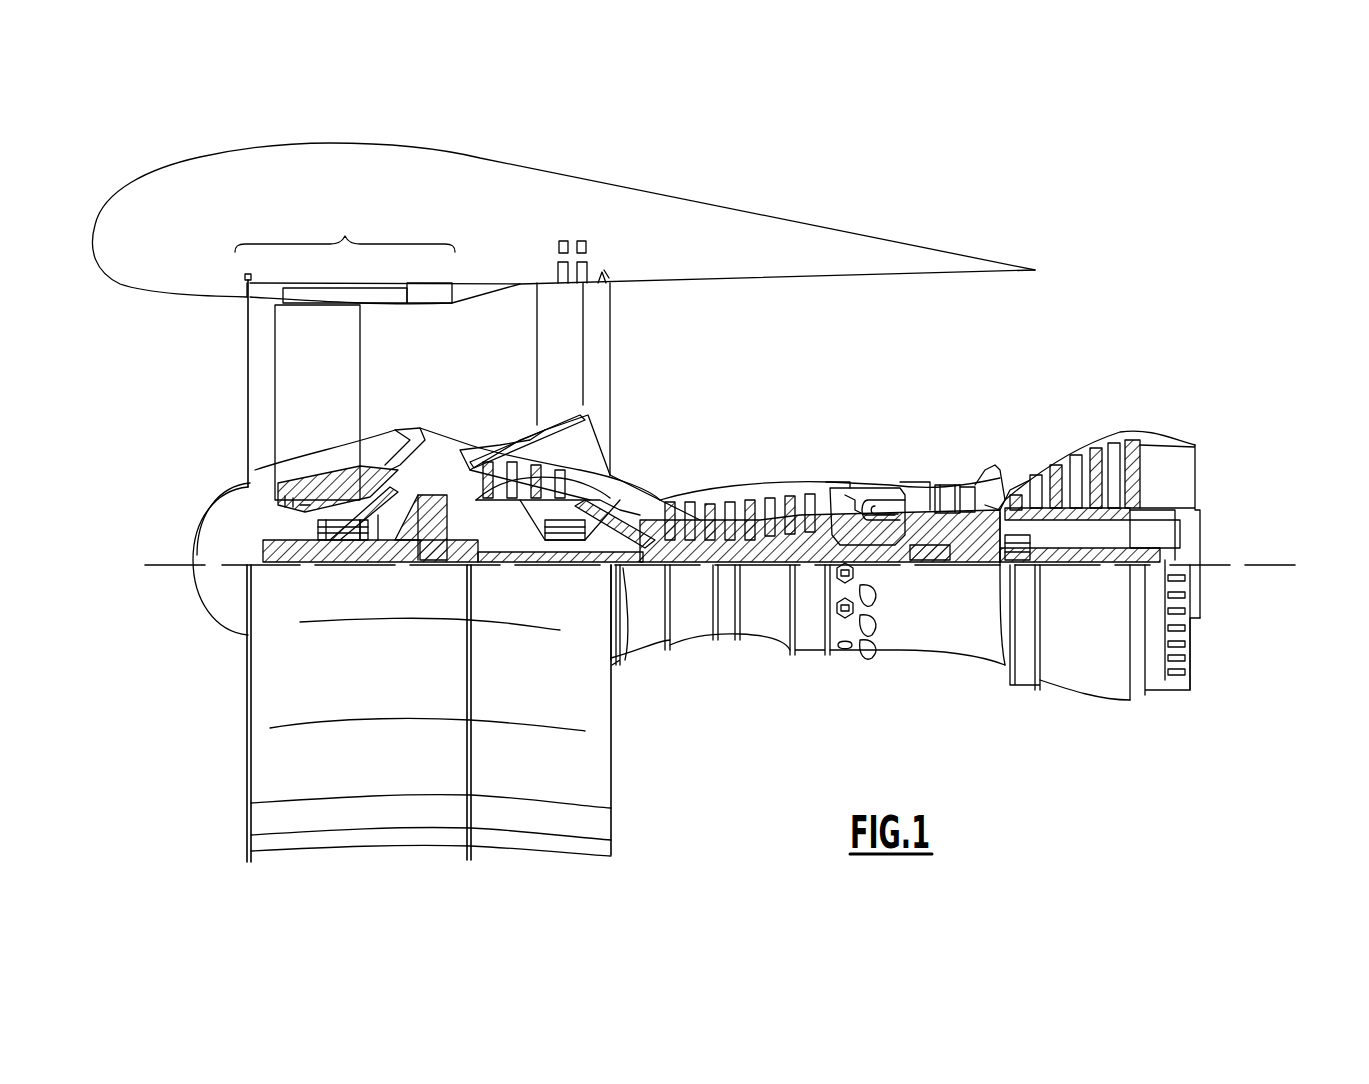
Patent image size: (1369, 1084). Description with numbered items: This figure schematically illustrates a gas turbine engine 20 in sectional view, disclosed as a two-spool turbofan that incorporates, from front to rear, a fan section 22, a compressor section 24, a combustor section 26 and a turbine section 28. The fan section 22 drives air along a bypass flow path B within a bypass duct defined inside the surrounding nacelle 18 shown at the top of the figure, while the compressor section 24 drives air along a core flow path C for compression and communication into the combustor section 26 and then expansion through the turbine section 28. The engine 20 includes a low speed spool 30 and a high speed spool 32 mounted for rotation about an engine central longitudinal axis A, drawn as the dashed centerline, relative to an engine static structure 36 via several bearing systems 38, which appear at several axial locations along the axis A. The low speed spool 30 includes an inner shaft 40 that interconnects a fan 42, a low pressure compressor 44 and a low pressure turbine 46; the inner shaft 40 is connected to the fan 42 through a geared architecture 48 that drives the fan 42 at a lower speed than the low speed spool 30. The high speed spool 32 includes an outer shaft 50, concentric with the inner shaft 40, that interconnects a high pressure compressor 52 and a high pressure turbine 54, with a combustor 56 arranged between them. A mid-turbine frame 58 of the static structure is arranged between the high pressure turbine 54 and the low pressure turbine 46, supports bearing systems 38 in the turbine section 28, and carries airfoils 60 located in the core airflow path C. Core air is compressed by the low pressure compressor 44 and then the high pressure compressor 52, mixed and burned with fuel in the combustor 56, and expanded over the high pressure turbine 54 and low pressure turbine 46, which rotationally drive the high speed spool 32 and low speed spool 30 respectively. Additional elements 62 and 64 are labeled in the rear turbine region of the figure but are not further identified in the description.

The nacelle 18 is at (558, 198).
The gas turbine engine 20 is at (1068, 212).
The fan section 22 is at (422, 341).
The compressor section 24 is at (857, 400).
The combustor section 26 is at (933, 400).
The turbine section 28 is at (1148, 400).
The low speed spool 30 is at (768, 575).
The high speed spool 32 is at (803, 506).
The engine static structure 36 is at (808, 658).
The bearing systems 38 is at (330, 570).
The inner shaft 40 is at (640, 660).
The fan 42 is at (332, 410).
The low pressure compressor 44 is at (545, 470).
The low pressure turbine 46 is at (1073, 455).
The geared architecture 48 is at (435, 575).
The outer shaft 50 is at (895, 560).
The high pressure compressor 52 is at (730, 490).
The high pressure turbine 54 is at (950, 485).
The combustor 56 is at (884, 503).
The mid-turbine frame 58 is at (1008, 470).
The airfoils 60 is at (1030, 560).
The core airflow path 62 is at (1130, 500).
The bypass flow path 64 is at (1127, 457).
The engine central longitudinal axis A is at (1290, 562).
The bypass flow path B is at (480, 353).
The core flow path C is at (440, 462).